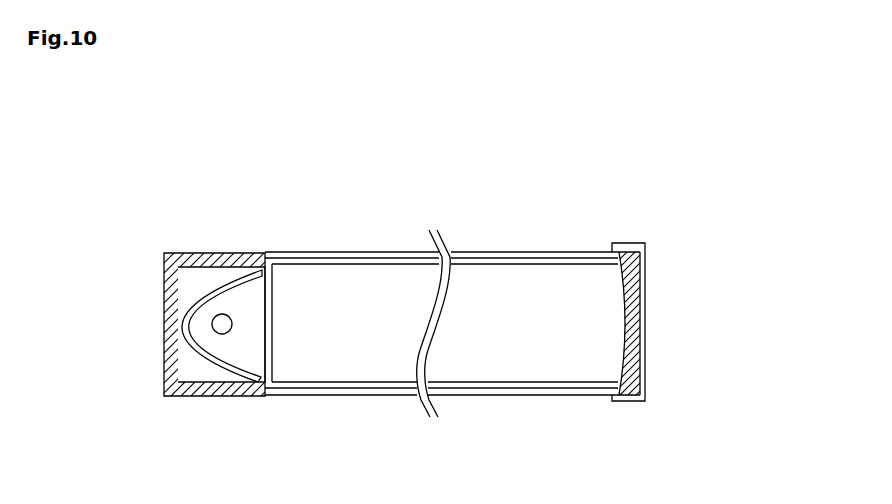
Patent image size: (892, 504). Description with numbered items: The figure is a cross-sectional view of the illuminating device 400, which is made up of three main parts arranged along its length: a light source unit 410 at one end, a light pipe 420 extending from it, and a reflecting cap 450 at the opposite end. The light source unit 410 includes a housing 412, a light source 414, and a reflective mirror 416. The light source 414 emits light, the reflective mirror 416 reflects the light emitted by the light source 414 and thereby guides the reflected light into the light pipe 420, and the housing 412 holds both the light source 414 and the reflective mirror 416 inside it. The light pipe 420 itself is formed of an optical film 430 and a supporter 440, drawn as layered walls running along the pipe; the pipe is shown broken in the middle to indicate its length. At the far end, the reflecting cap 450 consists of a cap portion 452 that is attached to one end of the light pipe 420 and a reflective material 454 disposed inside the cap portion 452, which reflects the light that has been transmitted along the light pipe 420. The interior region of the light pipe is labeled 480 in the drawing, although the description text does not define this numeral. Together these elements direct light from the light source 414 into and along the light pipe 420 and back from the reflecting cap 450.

The illuminating device 400 is at (697, 161).
The light source unit 410 is at (130, 436).
The housing 412 is at (192, 394).
The light source 414 is at (222, 325).
The reflective mirror 416 is at (200, 357).
The light pipe 420 is at (586, 207).
The optical film 430 is at (566, 263).
The supporter 440 is at (518, 255).
The reflecting cap 450 is at (716, 322).
The cap portion 452 is at (641, 323).
The reflective material 454 is at (637, 357).
The light guide interior 480 is at (348, 292).